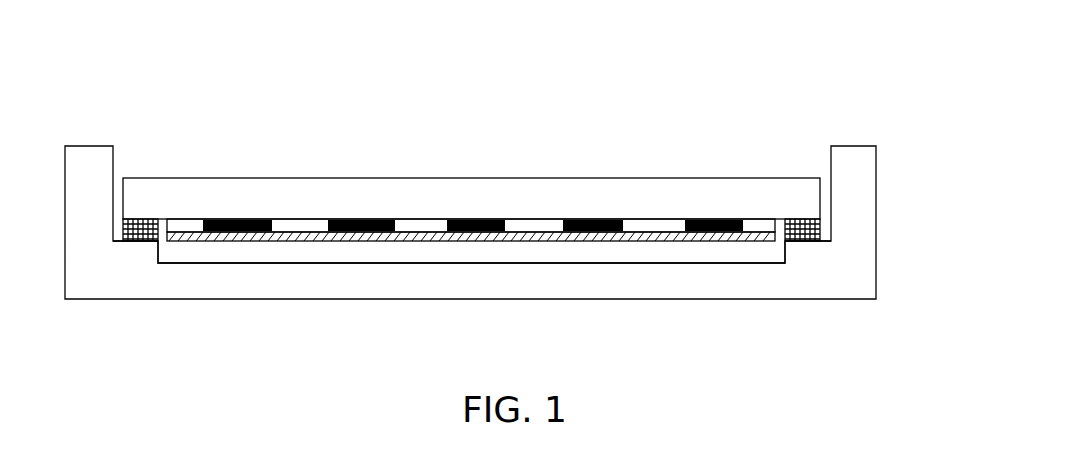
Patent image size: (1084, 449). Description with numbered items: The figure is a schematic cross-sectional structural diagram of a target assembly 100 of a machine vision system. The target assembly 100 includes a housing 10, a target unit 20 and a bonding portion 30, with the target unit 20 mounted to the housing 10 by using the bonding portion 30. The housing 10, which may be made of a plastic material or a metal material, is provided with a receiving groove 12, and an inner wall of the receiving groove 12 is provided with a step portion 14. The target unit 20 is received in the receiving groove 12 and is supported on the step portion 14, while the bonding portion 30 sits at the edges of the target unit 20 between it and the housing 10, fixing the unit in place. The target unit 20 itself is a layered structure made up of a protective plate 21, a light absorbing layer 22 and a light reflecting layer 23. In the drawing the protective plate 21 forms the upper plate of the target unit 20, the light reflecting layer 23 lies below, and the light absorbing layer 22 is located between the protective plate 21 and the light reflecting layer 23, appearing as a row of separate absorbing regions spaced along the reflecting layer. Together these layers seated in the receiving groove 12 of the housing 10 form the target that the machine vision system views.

The target assembly 100 is at (680, 80).
The housing 10 is at (858, 275).
The receiving groove 12 is at (740, 255).
The step portion 14 is at (827, 238).
The target unit 20 is at (471, 154).
The protective plate 21 is at (388, 193).
The light absorbing layer 22 is at (468, 220).
The light reflecting layer 23 is at (388, 108).
The bonding portion 30 is at (805, 220).